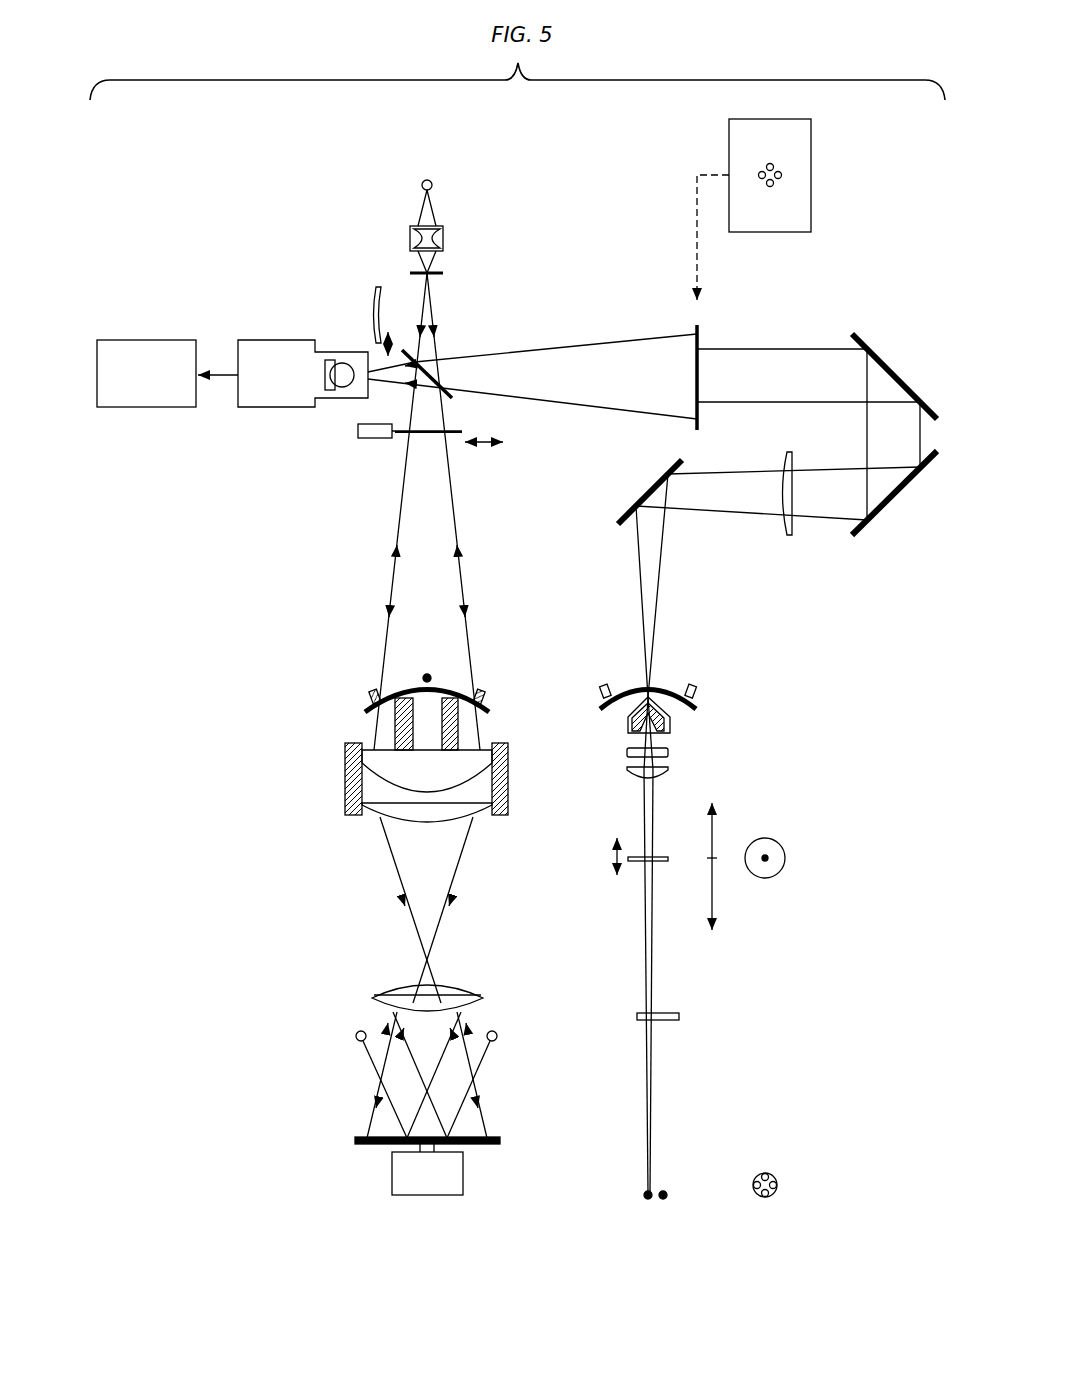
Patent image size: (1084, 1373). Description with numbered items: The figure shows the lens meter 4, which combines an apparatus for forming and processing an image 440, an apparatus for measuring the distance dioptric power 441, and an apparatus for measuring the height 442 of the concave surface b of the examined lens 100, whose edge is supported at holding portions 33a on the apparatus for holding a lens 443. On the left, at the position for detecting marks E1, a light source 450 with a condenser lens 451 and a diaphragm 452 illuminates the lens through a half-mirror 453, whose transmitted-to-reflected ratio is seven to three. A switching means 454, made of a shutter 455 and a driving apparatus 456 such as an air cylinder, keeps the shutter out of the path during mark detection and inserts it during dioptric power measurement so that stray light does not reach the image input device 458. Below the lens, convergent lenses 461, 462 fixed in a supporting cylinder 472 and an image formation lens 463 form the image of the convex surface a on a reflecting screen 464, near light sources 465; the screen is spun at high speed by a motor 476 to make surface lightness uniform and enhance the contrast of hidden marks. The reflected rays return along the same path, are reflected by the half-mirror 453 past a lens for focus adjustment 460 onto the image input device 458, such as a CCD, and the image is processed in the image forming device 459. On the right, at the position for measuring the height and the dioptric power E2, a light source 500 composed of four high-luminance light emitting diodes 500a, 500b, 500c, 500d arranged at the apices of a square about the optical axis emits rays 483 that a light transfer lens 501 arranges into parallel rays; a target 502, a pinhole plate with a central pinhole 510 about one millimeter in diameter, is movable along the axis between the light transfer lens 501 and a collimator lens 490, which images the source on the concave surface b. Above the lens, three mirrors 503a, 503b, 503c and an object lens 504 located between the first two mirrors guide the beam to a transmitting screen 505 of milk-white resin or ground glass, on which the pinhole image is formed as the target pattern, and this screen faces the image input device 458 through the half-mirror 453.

The lens meter 4 is at (258, 1180).
The apparatus for forming and processing an image 440 is at (280, 266).
The apparatus for measuring the distance dioptric power 441 is at (616, 312).
The light source 450 is at (432, 187).
The condenser lens 451 is at (444, 238).
The diaphragm 452 is at (436, 272).
The half-mirror 453 is at (453, 398).
The switching means 454 is at (336, 466).
The shutter 455 is at (399, 434).
The driving apparatus 456 is at (373, 440).
The image input device 458 is at (270, 340).
The image forming device 459 is at (142, 340).
The lens for focus adjustment 460 is at (375, 300).
The convergent lens 461 is at (492, 752).
The convergent lens 462 is at (508, 805).
The image formation lens 463 is at (462, 986).
The reflecting screen 464 is at (500, 1138).
The light sources 465 is at (359, 1030).
The supporting cylinder 472 is at (345, 778).
The motor 476 is at (463, 1173).
The apparatus for holding a lens 443 is at (459, 722).
The apparatus for measuring the height 442 is at (677, 728).
The rays 483 is at (652, 1075).
The collimator lens 490 is at (668, 770).
The light source 500 is at (665, 1190).
The light emitting diode 500a is at (759, 1174).
The light emitting diode 500b is at (778, 1186).
The light emitting diode 500c is at (768, 1196).
The light emitting diode 500d is at (753, 1187).
The light transfer lens 501 is at (672, 1013).
The target 502 is at (637, 862).
The mirror 503a is at (645, 490).
The mirror 503b is at (872, 514).
The mirror 503c is at (884, 366).
The object lens 504 is at (789, 536).
The transmitting screen 505 is at (811, 172).
The pinhole 510 is at (772, 868).
The eye model 100 is at (356, 709).
The holding members 33a is at (368, 693).
The position for detecting marks E1 is at (429, 676).
The position for measuring the height and the dioptric power E2 is at (667, 702).
The convex surface a is at (418, 688).
The concave surface b is at (437, 702).